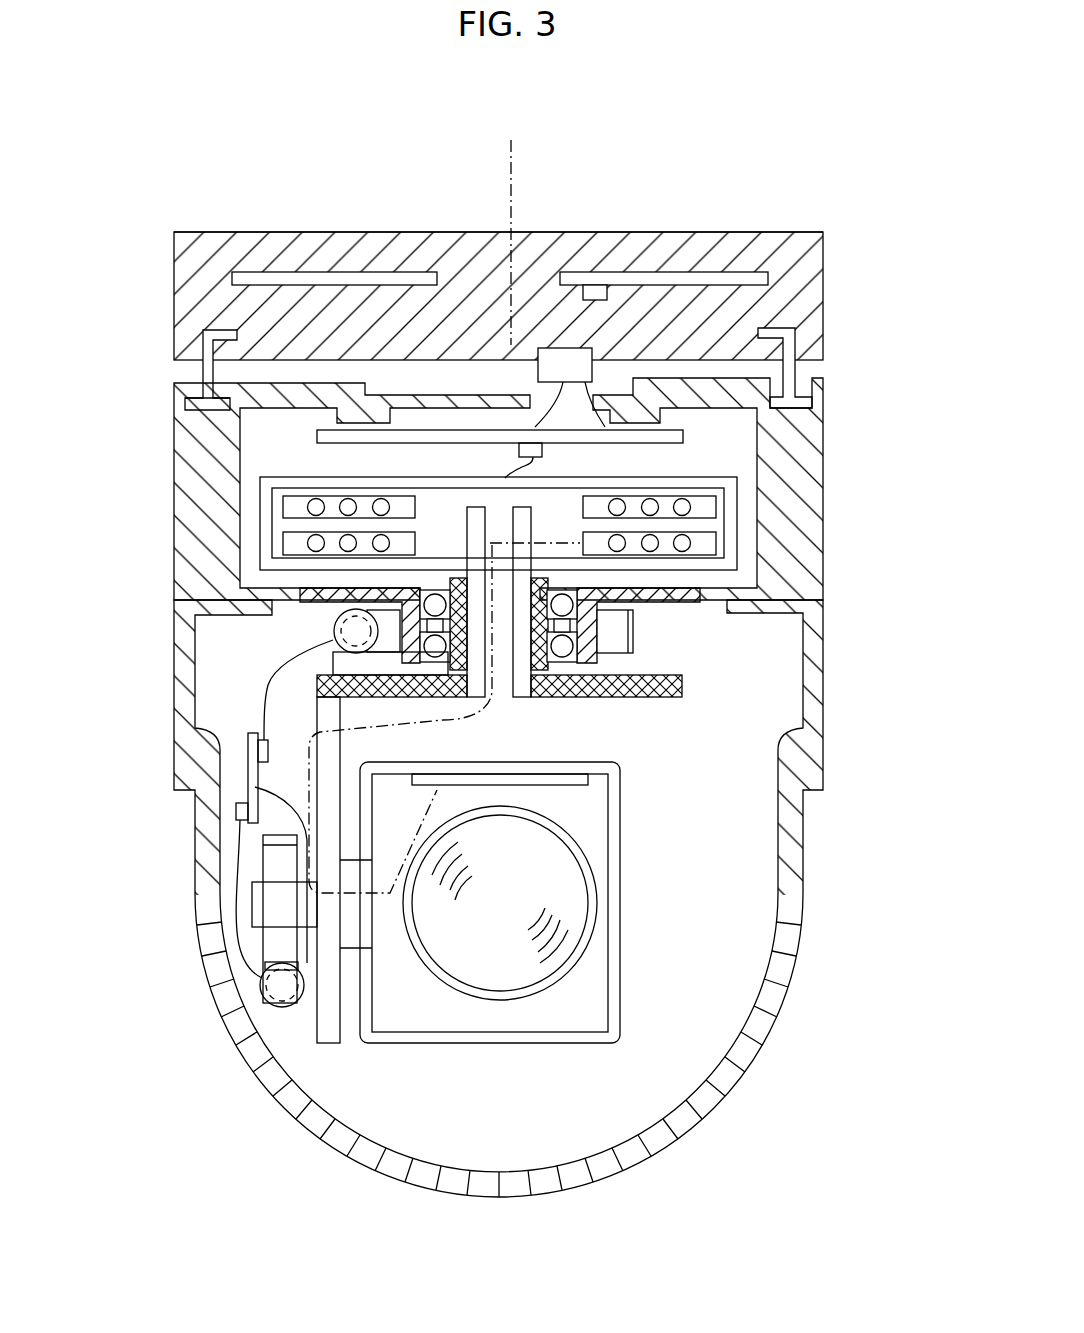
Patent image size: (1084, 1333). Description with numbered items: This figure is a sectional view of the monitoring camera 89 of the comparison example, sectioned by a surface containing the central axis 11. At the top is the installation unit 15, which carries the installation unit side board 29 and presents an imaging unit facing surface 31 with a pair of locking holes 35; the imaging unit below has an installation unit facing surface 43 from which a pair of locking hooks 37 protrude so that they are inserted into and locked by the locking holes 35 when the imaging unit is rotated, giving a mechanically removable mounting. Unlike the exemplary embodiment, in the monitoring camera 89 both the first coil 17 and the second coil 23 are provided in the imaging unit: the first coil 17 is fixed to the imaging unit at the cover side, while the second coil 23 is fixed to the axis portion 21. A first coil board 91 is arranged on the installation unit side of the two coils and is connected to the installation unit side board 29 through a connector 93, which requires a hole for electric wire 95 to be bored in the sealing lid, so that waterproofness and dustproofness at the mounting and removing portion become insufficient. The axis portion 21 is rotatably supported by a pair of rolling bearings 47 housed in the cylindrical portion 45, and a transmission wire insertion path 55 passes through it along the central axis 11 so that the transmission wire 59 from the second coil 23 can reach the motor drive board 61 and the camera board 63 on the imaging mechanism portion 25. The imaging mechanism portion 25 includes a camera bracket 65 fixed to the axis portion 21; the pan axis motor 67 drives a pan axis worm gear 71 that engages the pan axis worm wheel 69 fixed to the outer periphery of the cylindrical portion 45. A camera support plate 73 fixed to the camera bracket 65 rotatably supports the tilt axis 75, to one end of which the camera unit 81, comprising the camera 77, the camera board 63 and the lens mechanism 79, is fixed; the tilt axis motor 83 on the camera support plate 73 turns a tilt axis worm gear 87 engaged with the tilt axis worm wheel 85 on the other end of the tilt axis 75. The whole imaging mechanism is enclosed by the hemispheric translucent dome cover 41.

The central axis 11 is at (514, 148).
The installation unit 15 is at (776, 231).
The first coil 17 is at (645, 508).
The axis portion 21 is at (463, 580).
The second coil 23 is at (645, 545).
The imaging mechanism portion 25 is at (697, 939).
The installation unit side board 29 is at (673, 272).
The imaging unit facing surface 31 is at (807, 362).
The locking hole 35 is at (235, 333).
The locking hook 37 is at (795, 334).
The dome cover 41 is at (660, 1152).
The installation unit facing surface 43 is at (195, 374).
The cylindrical portion 45 is at (580, 640).
The rolling bearing 47 is at (548, 600).
The transmission wire insertion path 55 is at (505, 660).
The transmission wire 59 is at (545, 543).
The motor drive board 61 is at (248, 745).
The camera board 63 is at (560, 785).
The camera bracket 65 is at (683, 686).
The pan axis motor 67 is at (300, 660).
The pan axis worm wheel 69 is at (633, 630).
The pan axis worm gear 71 is at (335, 640).
The camera support plate 73 is at (337, 1045).
The tilt axis 75 is at (253, 906).
The camera 77 is at (428, 1045).
The lens mechanism 79 is at (505, 1003).
The camera unit 81 is at (624, 1034).
The tilt axis motor 83 is at (305, 1008).
The tilt axis worm wheel 85 is at (263, 848).
The tilt axis worm gear 87 is at (265, 998).
The monitoring camera 89 is at (155, 235).
The first coil board 91 is at (690, 437).
The connector 93 is at (538, 350).
The hole for electric wire 95 is at (592, 350).